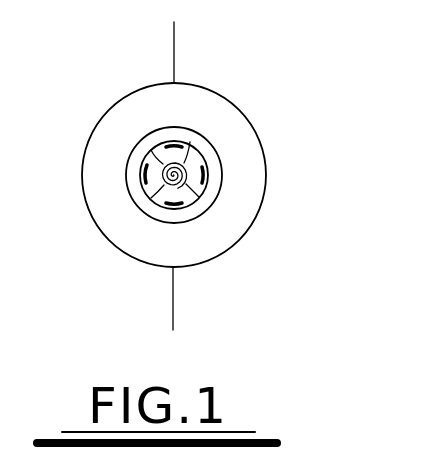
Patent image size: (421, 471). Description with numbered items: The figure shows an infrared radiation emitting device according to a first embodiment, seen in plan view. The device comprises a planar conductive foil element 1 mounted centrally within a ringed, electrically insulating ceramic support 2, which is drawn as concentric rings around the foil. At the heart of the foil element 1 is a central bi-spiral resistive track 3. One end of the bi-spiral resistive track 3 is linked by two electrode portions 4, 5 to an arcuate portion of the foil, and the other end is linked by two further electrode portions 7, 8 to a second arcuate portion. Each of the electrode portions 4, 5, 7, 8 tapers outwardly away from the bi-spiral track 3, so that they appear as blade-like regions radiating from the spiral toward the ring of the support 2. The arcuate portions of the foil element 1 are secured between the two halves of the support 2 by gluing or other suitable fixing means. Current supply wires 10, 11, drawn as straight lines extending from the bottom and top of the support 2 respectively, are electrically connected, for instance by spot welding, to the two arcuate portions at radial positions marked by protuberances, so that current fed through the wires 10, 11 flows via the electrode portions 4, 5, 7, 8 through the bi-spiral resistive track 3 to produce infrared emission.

The conductive foil element 1 is at (206, 170).
The support 2 is at (138, 117).
The bi-spiral resistive track 3 is at (152, 183).
The electrode portion 4 is at (203, 197).
The electrode portion 5 is at (163, 193).
The electrode portion 7 is at (187, 148).
The electrode portion 8 is at (152, 160).
The current supply wire 10 is at (173, 298).
The current supply wire 11 is at (174, 52).